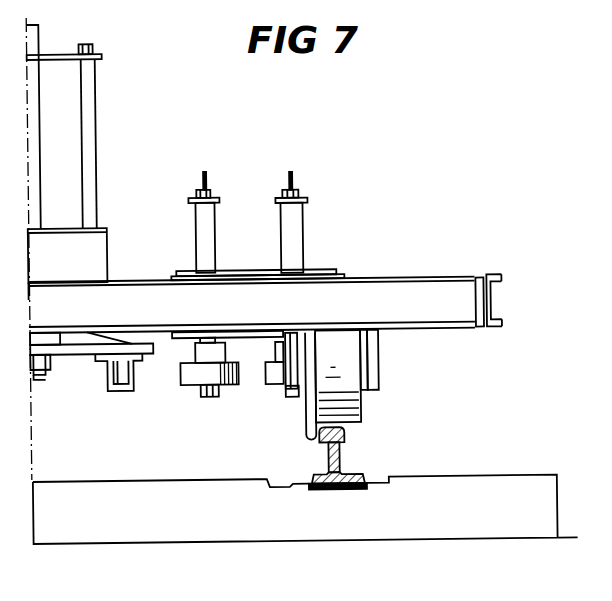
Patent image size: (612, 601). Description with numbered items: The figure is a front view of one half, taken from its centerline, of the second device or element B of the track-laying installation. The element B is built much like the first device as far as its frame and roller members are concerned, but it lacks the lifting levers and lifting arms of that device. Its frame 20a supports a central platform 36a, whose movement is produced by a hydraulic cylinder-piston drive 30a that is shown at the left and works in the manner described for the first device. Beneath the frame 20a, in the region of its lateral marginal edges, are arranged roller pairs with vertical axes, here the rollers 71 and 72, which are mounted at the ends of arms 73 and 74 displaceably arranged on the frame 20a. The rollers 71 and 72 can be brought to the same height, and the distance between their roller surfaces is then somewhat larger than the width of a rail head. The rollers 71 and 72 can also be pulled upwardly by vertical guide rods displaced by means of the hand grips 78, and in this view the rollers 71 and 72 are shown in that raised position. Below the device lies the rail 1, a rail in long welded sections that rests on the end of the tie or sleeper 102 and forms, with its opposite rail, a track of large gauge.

The hydraulic cylinder-piston drive 30a is at (37, 173).
The hand grips 78 is at (208, 180).
The arm 73 is at (200, 233).
The arm 74 is at (295, 230).
The second device or element B is at (420, 265).
The frame 20a is at (360, 314).
The central platform 36a is at (78, 350).
The roller 71 is at (193, 380).
The roller 72 is at (277, 381).
The rail 1 is at (355, 449).
The tie or sleeper 102 is at (232, 534).